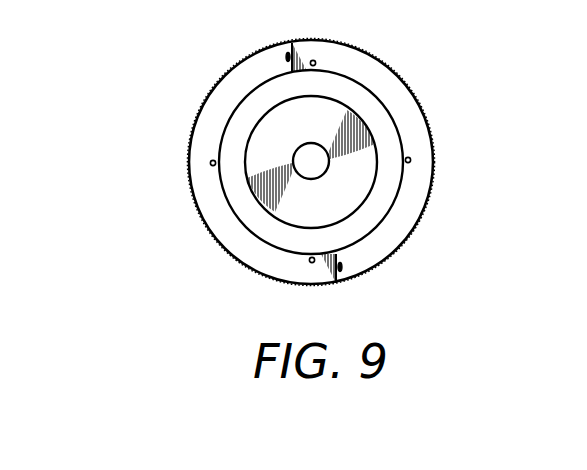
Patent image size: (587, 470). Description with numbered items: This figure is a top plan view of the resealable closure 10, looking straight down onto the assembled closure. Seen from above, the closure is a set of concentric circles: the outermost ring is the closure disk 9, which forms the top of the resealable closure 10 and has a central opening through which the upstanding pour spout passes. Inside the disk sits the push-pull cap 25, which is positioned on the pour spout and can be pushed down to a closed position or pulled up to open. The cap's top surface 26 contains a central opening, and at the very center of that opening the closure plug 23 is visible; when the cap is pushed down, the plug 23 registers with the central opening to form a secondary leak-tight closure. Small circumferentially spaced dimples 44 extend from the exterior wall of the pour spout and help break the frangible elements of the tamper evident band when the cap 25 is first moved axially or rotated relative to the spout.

The resealable closure 10 is at (198, 96).
The closure disk 9 is at (377, 77).
The push-pull cap 25 is at (388, 143).
The top surface 26 is at (360, 177).
The closure plug 23 is at (310, 165).
The dimples 44 is at (310, 258).